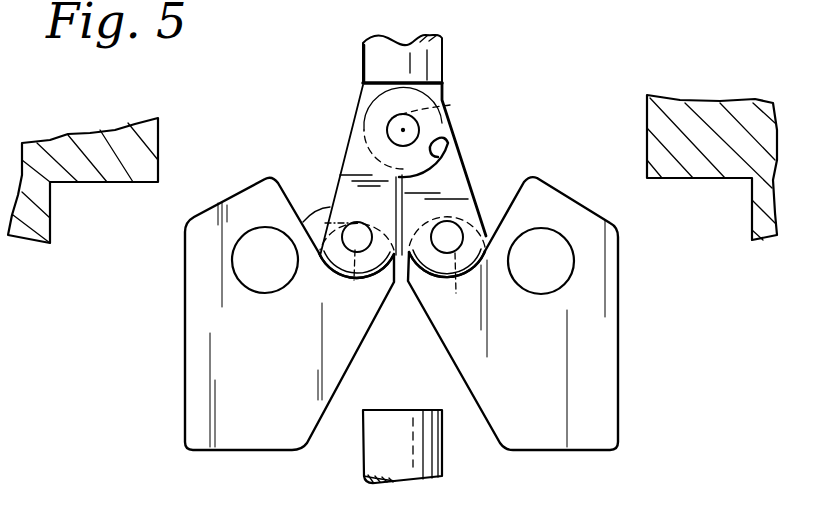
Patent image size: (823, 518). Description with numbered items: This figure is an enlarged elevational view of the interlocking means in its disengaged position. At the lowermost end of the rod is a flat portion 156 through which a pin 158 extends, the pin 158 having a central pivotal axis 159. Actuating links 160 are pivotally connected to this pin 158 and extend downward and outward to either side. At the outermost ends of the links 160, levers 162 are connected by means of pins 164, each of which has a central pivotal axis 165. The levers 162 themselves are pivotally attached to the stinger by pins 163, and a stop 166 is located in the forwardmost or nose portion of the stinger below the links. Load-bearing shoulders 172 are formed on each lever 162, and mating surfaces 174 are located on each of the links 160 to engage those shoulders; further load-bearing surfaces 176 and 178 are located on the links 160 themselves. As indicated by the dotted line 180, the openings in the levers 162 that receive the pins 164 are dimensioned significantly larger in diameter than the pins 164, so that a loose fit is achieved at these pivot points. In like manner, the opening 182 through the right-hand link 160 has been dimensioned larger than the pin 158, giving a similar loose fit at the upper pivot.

The flat portion 156 is at (440, 90).
The pin 158 is at (419, 130).
The central pivotal axis 159 is at (403, 130).
The actuating links 160 is at (353, 140).
The levers 162 is at (272, 388).
The pins 163 is at (262, 284).
The pins 164 is at (350, 240).
The central pivotal axes 165 is at (360, 235).
The stop 166 is at (443, 460).
The load-bearing shoulders 172 is at (326, 250).
The mating surfaces 174 is at (326, 262).
The load-bearing surface 176 is at (440, 146).
The load-bearing surface 178 is at (447, 168).
The dotted line 180 is at (402, 274).
The opening 182 is at (450, 105).